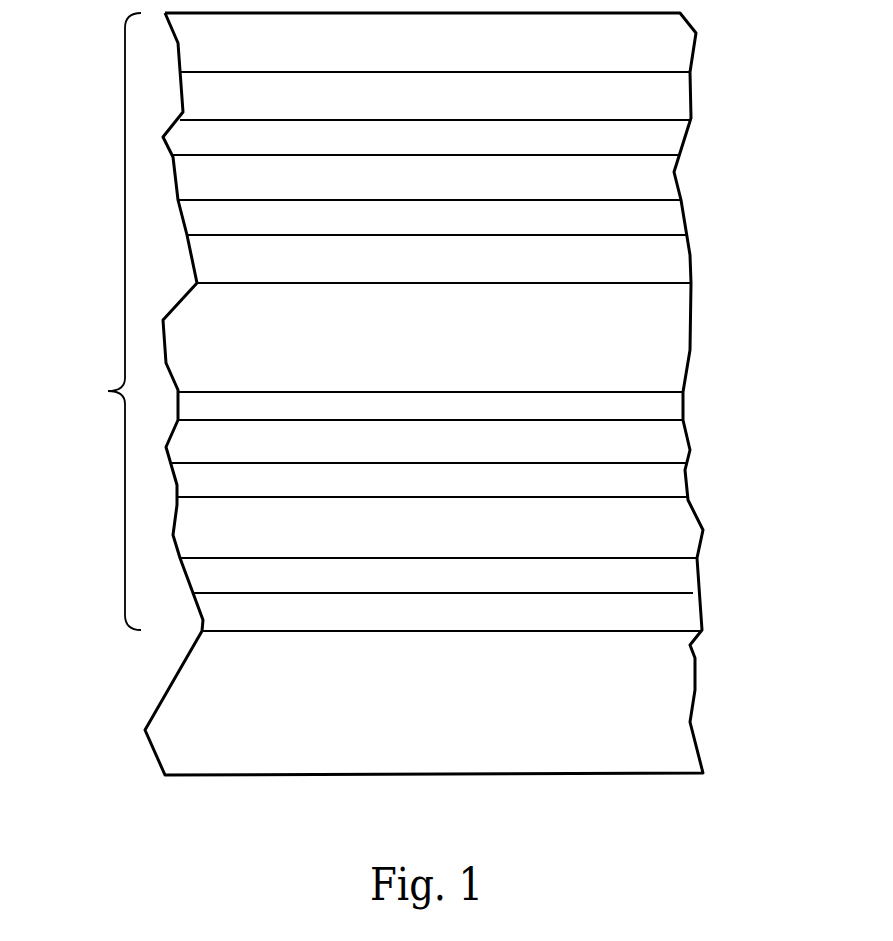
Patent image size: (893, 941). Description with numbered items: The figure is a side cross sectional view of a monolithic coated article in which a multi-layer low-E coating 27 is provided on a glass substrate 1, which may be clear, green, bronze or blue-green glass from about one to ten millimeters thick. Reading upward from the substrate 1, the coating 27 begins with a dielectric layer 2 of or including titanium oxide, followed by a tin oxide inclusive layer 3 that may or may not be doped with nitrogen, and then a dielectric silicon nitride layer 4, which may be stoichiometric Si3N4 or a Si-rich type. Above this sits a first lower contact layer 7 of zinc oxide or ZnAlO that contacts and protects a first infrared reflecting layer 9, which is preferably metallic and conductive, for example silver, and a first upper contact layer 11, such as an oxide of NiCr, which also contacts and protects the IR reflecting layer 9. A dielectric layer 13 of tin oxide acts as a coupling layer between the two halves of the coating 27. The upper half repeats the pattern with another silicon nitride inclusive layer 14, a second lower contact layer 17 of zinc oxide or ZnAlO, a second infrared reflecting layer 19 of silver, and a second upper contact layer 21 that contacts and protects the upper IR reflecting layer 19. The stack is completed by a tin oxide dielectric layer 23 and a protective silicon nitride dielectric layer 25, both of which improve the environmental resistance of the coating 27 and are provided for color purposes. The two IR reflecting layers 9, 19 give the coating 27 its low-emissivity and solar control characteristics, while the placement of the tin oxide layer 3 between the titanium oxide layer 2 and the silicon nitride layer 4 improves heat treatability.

The substrate 1 is at (650, 685).
The dielectric layer 2 is at (673, 609).
The tin oxide inclusive layer 3 is at (673, 577).
The dielectric silicon nitride layer 4 is at (648, 519).
The first lower contact layer 7 is at (648, 481).
The first infrared (IR) reflecting layer 9 is at (658, 440).
The first upper contact layer 11 is at (670, 405).
The dielectric layer 13 is at (648, 308).
The silicon nitride inclusive layer 14 is at (660, 260).
The second lower contact layer 17 is at (660, 212).
The second infrared (IR) reflecting layer 19 is at (673, 175).
The second upper contact layer 21 is at (667, 137).
The dielectric layer 23 is at (672, 92).
The protective dielectric layer 25 is at (652, 42).
The multi-layer coating 27 is at (100, 402).